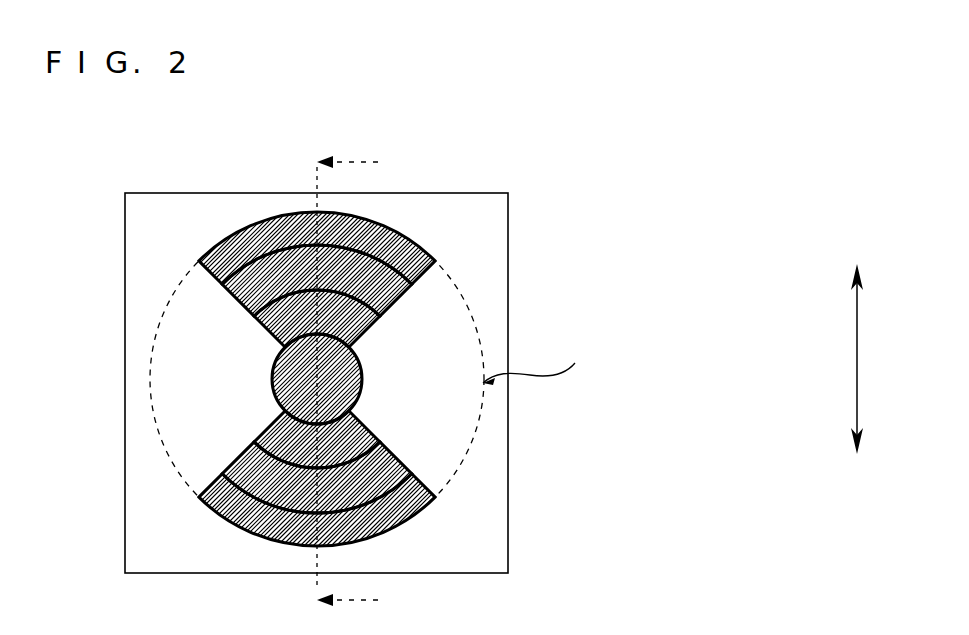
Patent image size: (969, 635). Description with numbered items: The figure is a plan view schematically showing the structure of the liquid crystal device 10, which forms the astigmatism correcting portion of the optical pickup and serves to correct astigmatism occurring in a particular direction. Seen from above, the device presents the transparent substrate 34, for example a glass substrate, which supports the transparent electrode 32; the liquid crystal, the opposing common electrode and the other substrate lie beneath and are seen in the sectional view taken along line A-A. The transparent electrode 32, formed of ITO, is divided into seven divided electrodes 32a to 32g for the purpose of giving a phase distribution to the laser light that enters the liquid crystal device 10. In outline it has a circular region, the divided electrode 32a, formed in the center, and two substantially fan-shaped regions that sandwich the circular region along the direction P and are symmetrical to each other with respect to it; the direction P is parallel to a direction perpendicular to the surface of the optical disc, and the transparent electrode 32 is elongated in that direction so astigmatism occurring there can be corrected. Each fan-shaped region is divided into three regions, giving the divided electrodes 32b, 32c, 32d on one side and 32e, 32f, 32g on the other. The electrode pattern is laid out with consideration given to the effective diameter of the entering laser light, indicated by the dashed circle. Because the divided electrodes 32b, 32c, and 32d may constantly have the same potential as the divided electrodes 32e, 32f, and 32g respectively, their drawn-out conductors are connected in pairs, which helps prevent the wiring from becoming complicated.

The liquid crystal device 10 is at (637, 183).
The transparent electrode 32 is at (398, 237).
The divided electrode 32a is at (350, 385).
The divided electrode 32b is at (380, 333).
The divided electrode 32c is at (407, 298).
The divided electrode 32d is at (408, 256).
The divided electrode 32e is at (366, 428).
The divided electrode 32f is at (375, 468).
The divided electrode 32g is at (413, 514).
The transparent substrate 34 is at (509, 311).